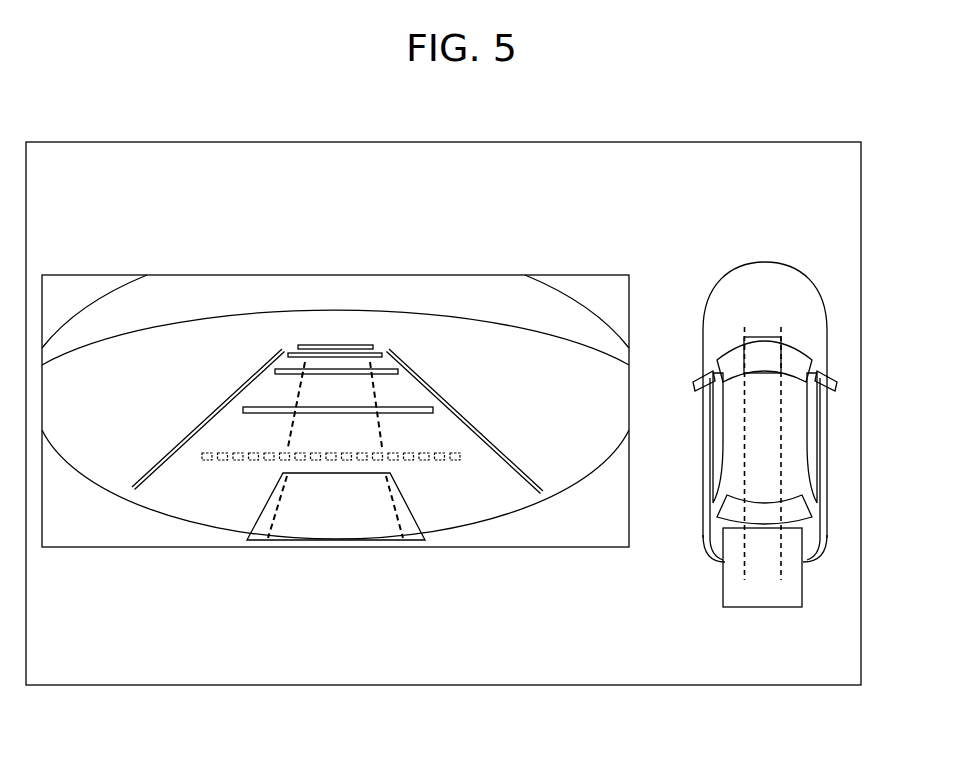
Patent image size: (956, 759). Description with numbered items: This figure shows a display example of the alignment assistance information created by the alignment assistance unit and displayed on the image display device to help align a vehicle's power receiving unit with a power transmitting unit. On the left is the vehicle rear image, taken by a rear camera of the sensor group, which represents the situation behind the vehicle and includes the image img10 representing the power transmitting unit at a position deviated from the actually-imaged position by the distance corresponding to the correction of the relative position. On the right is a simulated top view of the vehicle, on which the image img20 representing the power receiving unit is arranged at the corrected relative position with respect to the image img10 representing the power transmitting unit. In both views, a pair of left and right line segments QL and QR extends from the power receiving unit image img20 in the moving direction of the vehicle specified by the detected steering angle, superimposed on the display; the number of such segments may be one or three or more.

The image representing the power transmitting unit img10 is at (402, 498).
The image representing the power receiving unit img20 is at (765, 332).
The right line segment QR is at (880, 460).
The left line segment QL is at (390, 429).